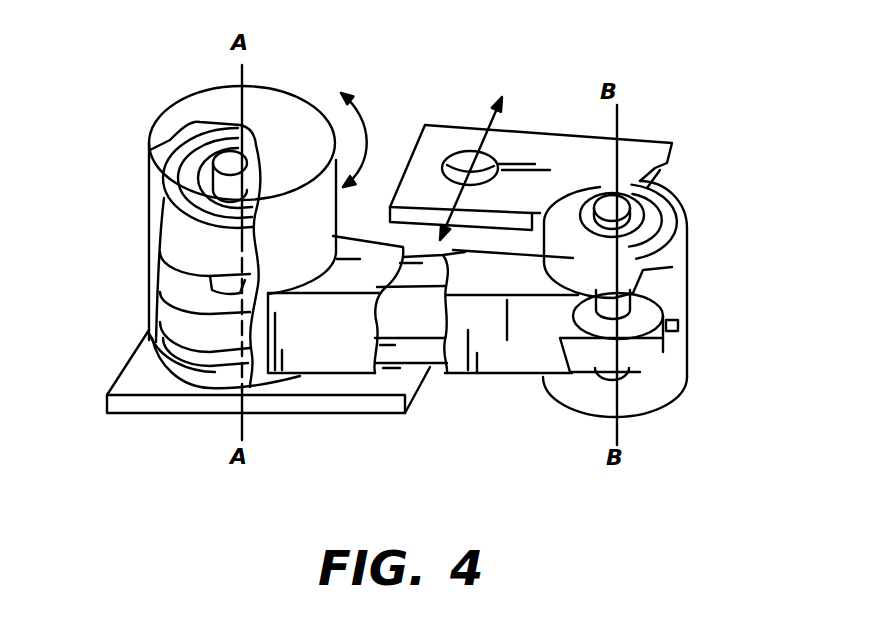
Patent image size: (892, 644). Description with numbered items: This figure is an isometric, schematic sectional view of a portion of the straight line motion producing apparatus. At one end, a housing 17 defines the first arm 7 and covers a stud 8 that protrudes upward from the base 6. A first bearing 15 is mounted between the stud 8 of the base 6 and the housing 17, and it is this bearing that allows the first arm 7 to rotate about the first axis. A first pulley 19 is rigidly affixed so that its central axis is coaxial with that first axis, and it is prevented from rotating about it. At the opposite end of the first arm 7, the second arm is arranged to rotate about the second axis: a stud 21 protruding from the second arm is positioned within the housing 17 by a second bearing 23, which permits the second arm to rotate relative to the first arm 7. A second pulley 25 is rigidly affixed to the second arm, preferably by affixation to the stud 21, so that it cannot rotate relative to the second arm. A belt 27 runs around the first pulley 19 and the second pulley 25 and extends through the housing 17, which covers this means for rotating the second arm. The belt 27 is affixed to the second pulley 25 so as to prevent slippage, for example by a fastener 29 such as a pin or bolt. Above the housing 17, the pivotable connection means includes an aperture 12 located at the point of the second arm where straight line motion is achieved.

The base 6 is at (147, 382).
The first arm 7 is at (328, 343).
The stud 8 is at (232, 158).
The aperture 12 is at (462, 170).
The first bearing 15 is at (190, 244).
The housing 17 is at (288, 135).
The first pulley 19 is at (195, 290).
The stud 21 is at (660, 187).
The second bearing 23 is at (663, 252).
The second pulley 25 is at (648, 307).
The belt 27 is at (192, 338).
The fastener 29 is at (670, 333).